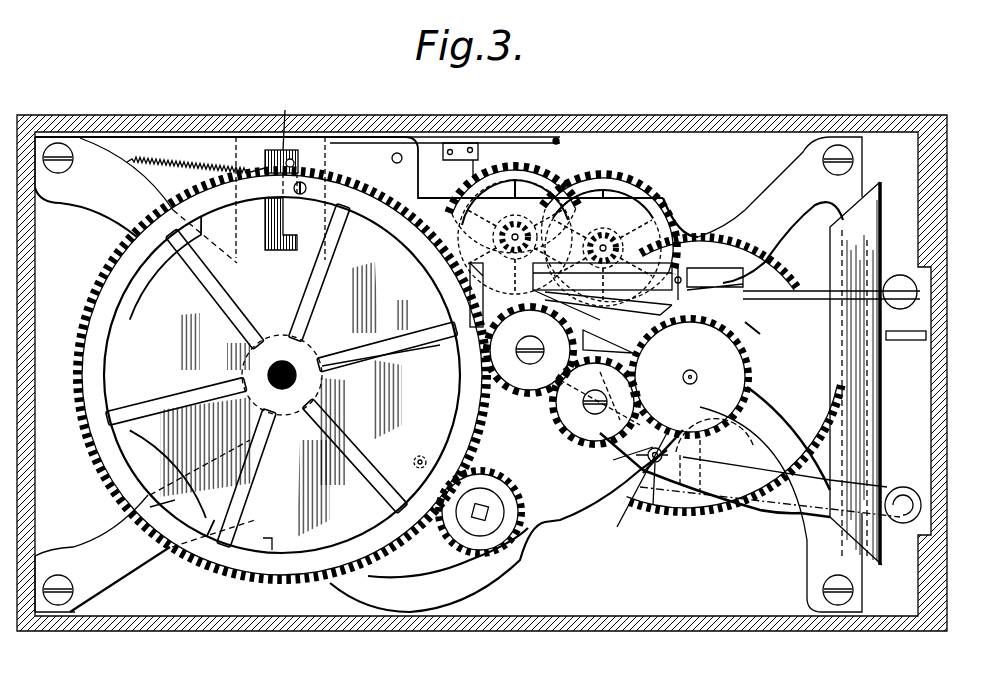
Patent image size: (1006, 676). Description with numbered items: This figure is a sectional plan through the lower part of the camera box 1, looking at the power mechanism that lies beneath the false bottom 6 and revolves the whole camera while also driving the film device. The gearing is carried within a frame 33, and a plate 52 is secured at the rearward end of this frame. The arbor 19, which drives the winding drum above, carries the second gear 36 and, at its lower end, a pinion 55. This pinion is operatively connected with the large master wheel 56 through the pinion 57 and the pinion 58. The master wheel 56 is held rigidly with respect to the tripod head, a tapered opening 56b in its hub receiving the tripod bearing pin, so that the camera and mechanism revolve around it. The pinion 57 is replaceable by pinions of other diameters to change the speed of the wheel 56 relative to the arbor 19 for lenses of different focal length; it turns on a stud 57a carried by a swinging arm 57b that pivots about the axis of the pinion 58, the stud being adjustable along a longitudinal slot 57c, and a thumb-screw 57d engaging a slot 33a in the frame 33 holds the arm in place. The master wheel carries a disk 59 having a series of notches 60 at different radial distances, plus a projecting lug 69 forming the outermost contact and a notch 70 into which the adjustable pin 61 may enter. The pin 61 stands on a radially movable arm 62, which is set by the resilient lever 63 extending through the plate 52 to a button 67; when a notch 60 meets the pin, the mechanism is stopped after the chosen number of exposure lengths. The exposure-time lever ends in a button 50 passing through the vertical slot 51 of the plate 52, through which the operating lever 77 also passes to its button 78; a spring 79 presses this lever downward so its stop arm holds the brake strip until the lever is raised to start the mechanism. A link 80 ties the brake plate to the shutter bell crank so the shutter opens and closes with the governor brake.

The camera box 1 is at (736, 124).
The false bottom 6 is at (110, 512).
The arbor 19 is at (697, 375).
The frame 33 is at (790, 188).
The slot 33a is at (627, 487).
The second gear 36 is at (684, 512).
The button 50 is at (927, 335).
The vertical slot 51 is at (622, 236).
The plate 52 is at (888, 182).
The pinion 55 is at (748, 388).
The master wheel 56 is at (324, 556).
The tapered opening 56b is at (381, 355).
The pinion 57 is at (595, 402).
The stud 57a is at (578, 410).
The swinging arm 57b is at (640, 458).
The longitudinal slot 57c is at (582, 419).
The thumb-screw 57d is at (653, 505).
The pinion 58 is at (530, 350).
The disk 59 is at (282, 375).
The notches 60 is at (165, 310).
The adjustable pin 61 is at (300, 166).
The radially movable arm 62 is at (263, 157).
The lever 63 is at (790, 505).
The button 67 is at (921, 505).
The projecting lug 69 is at (289, 117).
The notch 70 is at (288, 250).
The operating lever 77 is at (790, 273).
The operating button 78 is at (558, 143).
The spring 79 is at (516, 137).
The link 80 is at (420, 137).